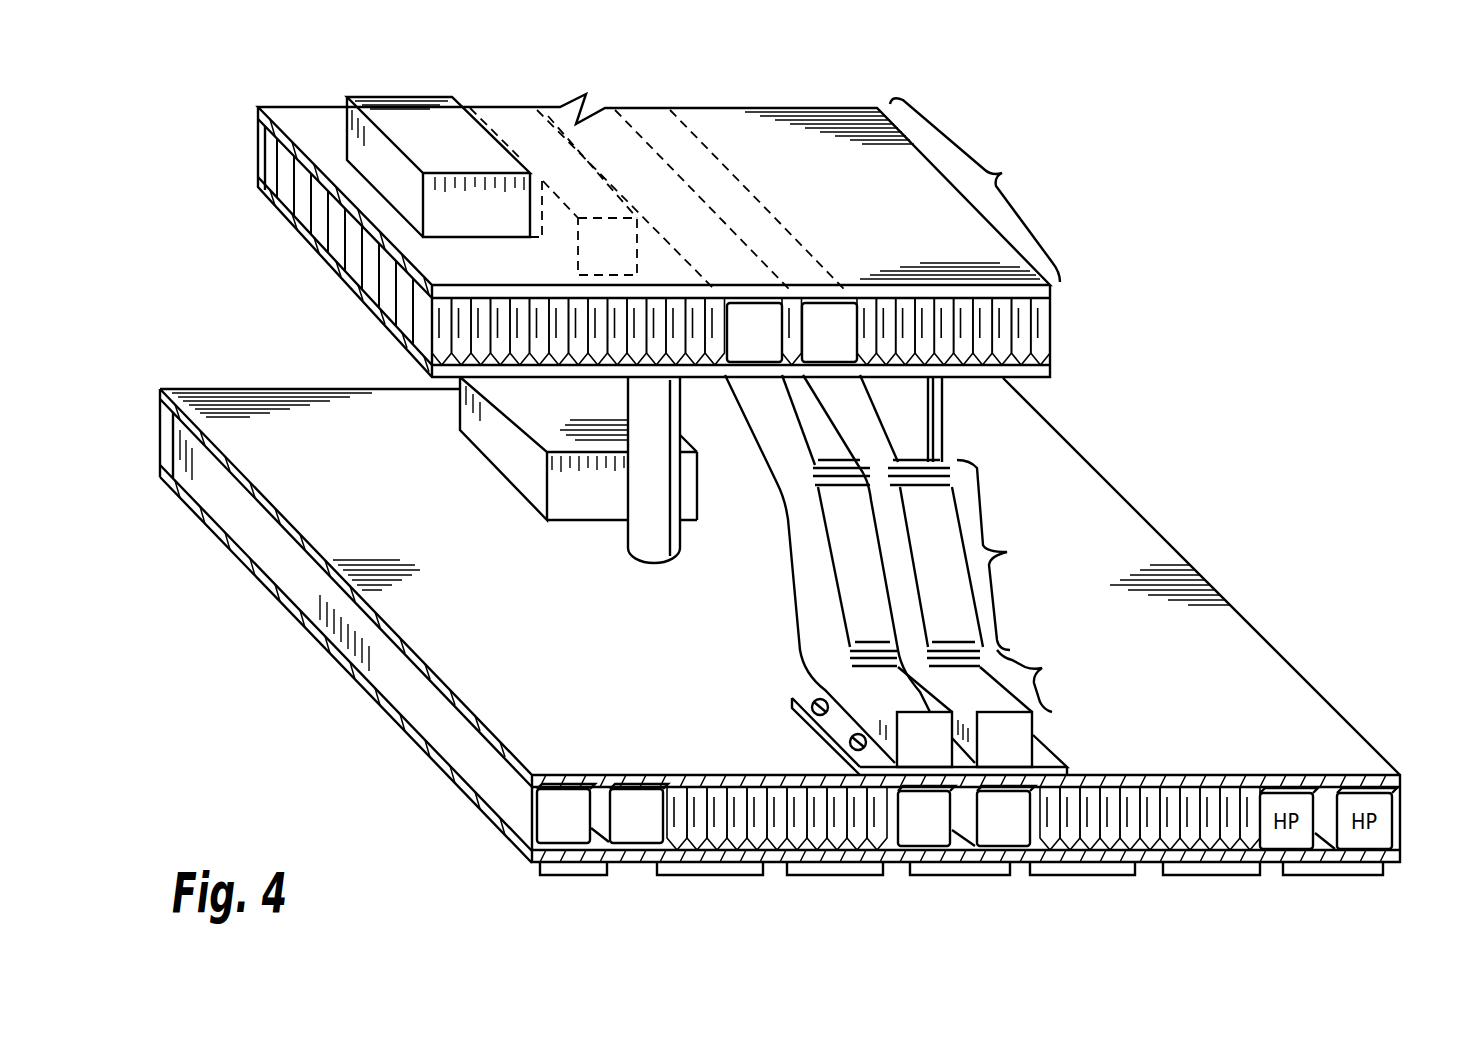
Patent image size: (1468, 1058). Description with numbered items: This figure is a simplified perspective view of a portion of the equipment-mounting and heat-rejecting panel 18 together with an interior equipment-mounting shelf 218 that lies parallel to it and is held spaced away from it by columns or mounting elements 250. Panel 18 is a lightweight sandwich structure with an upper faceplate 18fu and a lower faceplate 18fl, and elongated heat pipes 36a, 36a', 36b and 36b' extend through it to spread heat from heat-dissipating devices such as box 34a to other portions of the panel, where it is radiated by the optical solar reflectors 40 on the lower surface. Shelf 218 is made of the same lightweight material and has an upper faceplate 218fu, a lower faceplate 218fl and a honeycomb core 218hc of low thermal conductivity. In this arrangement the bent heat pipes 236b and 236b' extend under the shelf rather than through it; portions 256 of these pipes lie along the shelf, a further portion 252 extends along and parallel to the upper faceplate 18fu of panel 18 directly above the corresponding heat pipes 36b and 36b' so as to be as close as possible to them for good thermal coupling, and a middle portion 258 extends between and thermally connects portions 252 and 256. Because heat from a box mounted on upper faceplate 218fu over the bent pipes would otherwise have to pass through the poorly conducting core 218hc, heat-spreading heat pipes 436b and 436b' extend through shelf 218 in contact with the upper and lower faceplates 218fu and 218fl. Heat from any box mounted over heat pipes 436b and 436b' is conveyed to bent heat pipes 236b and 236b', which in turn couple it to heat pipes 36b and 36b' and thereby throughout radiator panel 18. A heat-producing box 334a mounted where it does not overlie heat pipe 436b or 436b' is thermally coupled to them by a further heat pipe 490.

The equipment-mounting and heat-rejecting panel 18 is at (1325, 660).
The upper faceplate of panel 18fu is at (1403, 785).
The lower face sheet of lower panel 18fl is at (1403, 858).
The equipment mounting shelf 218 is at (1062, 330).
The upper faceplate of shelf 218fu is at (297, 106).
The honeycomb core of shelf 218hc is at (262, 147).
The lower faceplate of shelf 218fl is at (257, 184).
The heat-producing box 334a is at (403, 97).
The heat-dissipating box 34a is at (512, 477).
The further heat pipe 490 is at (503, 110).
The heat-spreading heat pipe 436b is at (717, 300).
The heat-spreading heat pipe 436b' is at (844, 297).
The shelf portion of heat pipes 256 is at (975, 190).
The mounting element 250 is at (630, 546).
The bent heat pipe 236b is at (834, 569).
The bent heat pipe 236b' is at (921, 569).
The middle portion of heat pipes 258 is at (1007, 555).
The further portion of heat pipes 252 is at (940, 712).
The heat pipe 36a is at (566, 851).
The heat pipe of lower panel 36a' is at (641, 851).
The heat pipe 36b is at (926, 852).
The heat pipe 36b' is at (1006, 852).
The optical solar reflector 40 is at (842, 875).